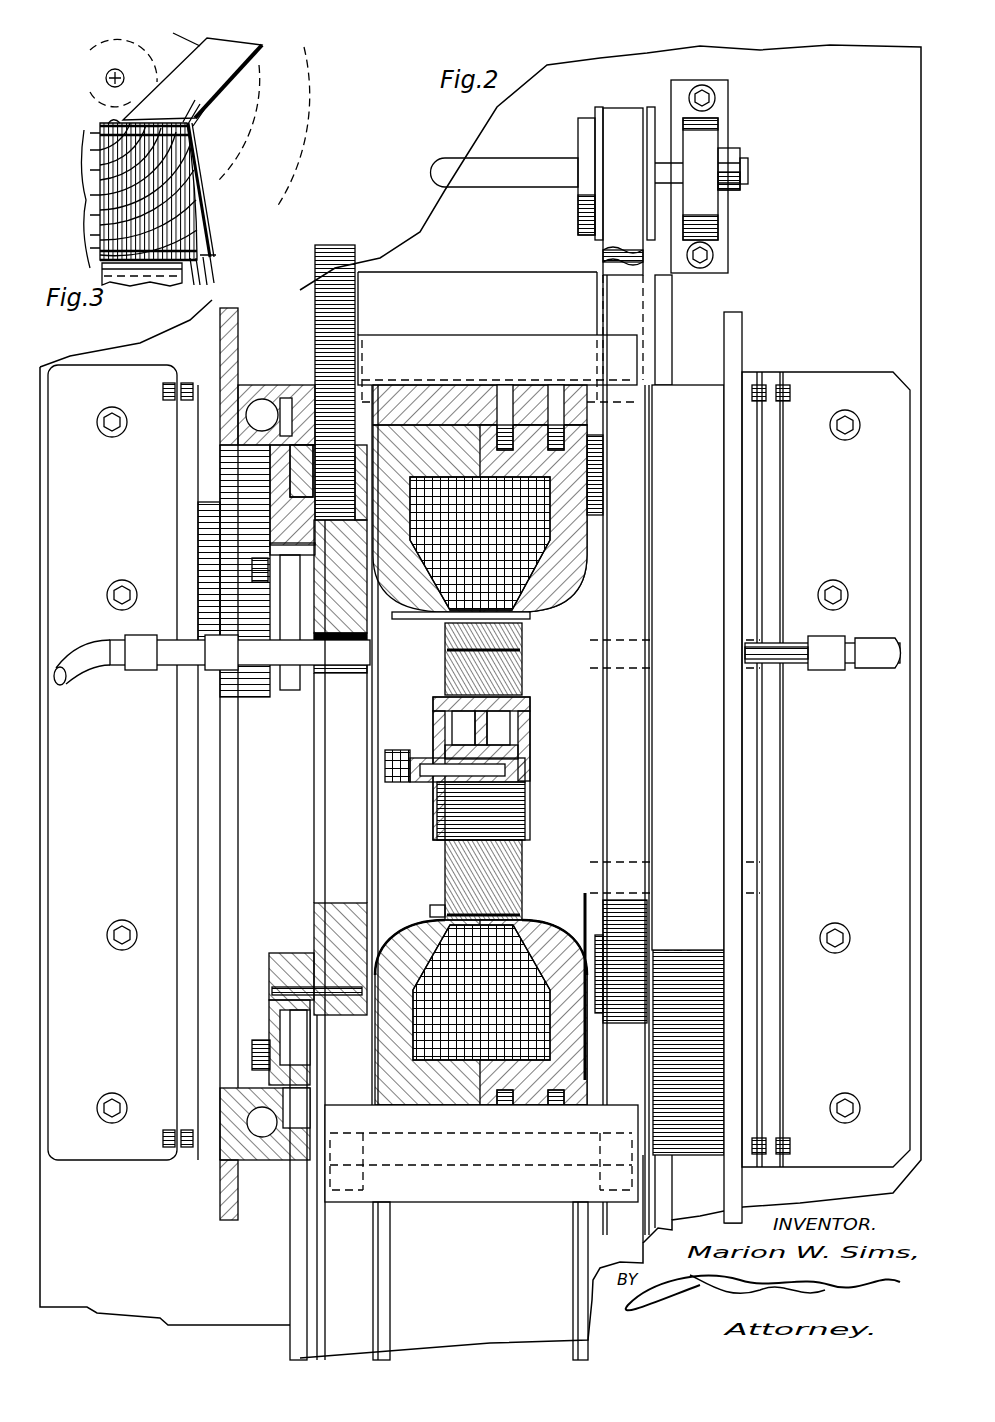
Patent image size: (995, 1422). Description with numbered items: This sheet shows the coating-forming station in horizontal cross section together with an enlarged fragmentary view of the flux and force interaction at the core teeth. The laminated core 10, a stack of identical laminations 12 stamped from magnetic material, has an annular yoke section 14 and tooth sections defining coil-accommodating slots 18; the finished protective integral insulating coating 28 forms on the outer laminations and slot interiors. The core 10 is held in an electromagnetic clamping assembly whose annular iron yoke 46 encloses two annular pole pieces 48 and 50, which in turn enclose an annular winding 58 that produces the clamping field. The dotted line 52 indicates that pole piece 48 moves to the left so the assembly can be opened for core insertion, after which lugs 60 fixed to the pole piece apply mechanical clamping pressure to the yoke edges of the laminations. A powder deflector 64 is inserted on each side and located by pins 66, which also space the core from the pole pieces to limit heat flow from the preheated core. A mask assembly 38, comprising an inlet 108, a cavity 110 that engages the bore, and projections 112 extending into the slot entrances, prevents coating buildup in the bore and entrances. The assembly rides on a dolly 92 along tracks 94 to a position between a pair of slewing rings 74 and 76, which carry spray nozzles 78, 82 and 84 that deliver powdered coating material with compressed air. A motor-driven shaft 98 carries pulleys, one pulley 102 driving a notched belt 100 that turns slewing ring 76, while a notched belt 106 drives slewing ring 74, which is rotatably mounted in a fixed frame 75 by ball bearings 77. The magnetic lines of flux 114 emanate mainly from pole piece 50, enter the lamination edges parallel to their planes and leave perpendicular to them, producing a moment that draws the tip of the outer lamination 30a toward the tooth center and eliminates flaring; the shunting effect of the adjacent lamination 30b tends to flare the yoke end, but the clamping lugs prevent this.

In FIG. 2, the pulley 102 is at (595, 115).
In FIG. 2, the shaft 98 is at (522, 176).
In FIG. 2, the notched belt 100 is at (610, 236).
In FIG. 2, the notched belt 106 is at (357, 272).
In FIG. 2, the fixed frame 75 is at (238, 338).
In FIG. 2, the slewing ring 74 is at (255, 385).
In FIG. 2, the ball bearings 77 is at (742, 338).
In FIG. 2, the slewing ring 76 is at (683, 385).
In FIG. 2, the pole piece 48 is at (415, 440).
In FIG. 2, the annular iron yoke 46 is at (458, 412).
In FIG. 3, the pole piece 50 is at (235, 60).
In FIG. 2, the pole piece 50 is at (590, 500).
In FIG. 3, the magnetic lines of flux 114 is at (82, 205).
In FIG. 2, the magnetic lines of flux 114 is at (572, 610).
In FIG. 2, the spray nozzle 82 is at (620, 650).
In FIG. 2, the spray nozzle 78 is at (258, 660).
In FIG. 2, the pins 66 is at (418, 622).
In FIG. 2, the cavity 110 is at (505, 724).
In FIG. 2, the mask assembly 38 is at (543, 741).
In FIG. 2, the inlet 108 is at (535, 772).
In FIG. 2, the projections 112 is at (510, 810).
In FIG. 2, the lugs 60 is at (434, 906).
In FIG. 2, the core 10 is at (512, 862).
In FIG. 2, the spray nozzle 84 is at (620, 862).
In FIG. 2, the dotted line 52 is at (370, 902).
In FIG. 2, the powder deflector 64 is at (543, 932).
In FIG. 2, the annular winding 58 is at (535, 1030).
In FIG. 2, the dolly 92 is at (478, 1205).
In FIG. 2, the tracks 94 is at (330, 1331).
In FIG. 3, the annular yoke section 14 is at (110, 121).
In FIG. 3, the laminations 12 is at (195, 136).
In FIG. 3, the integral insulating coating 28 is at (203, 205).
In FIG. 3, the slots 18 is at (102, 276).
In FIG. 3, the outer lamination 30a is at (213, 262).
In FIG. 3, the adjacent lamination 30b is at (203, 283).